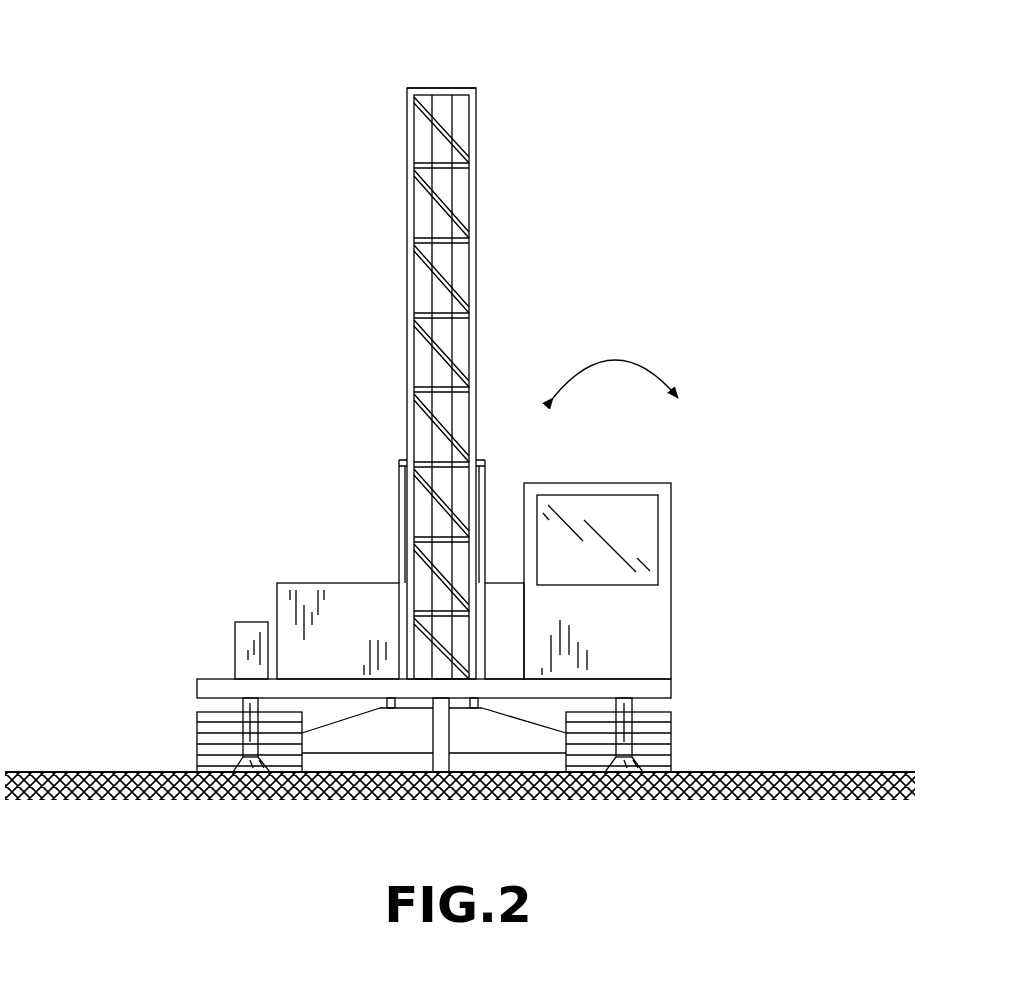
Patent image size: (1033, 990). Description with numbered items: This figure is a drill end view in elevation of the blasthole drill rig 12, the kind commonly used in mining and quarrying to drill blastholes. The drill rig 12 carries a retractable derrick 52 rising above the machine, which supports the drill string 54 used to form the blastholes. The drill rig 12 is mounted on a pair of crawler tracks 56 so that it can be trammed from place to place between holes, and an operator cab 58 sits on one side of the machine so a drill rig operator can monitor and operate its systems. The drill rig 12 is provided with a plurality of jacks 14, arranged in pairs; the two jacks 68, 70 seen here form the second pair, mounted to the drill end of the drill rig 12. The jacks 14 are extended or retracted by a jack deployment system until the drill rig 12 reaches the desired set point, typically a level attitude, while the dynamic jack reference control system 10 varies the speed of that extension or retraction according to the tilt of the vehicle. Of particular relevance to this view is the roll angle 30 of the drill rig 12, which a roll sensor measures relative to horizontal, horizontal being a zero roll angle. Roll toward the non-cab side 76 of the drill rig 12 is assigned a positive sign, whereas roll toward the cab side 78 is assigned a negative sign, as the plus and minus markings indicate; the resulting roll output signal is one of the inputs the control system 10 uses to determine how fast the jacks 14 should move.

The dynamic jack reference control system 10 is at (117, 163).
The drill rig 12 is at (335, 578).
The jacks 14 is at (245, 620).
The roll angle 30 is at (612, 360).
The retractable derrick 52 is at (478, 121).
The drill string 54 is at (435, 290).
The crawler tracks 56 is at (197, 715).
The operator cab 58 is at (672, 530).
The jack 68 is at (645, 768).
The jack 70 is at (197, 757).
The non-cab side 76 is at (197, 694).
The cab side 78 is at (672, 607).